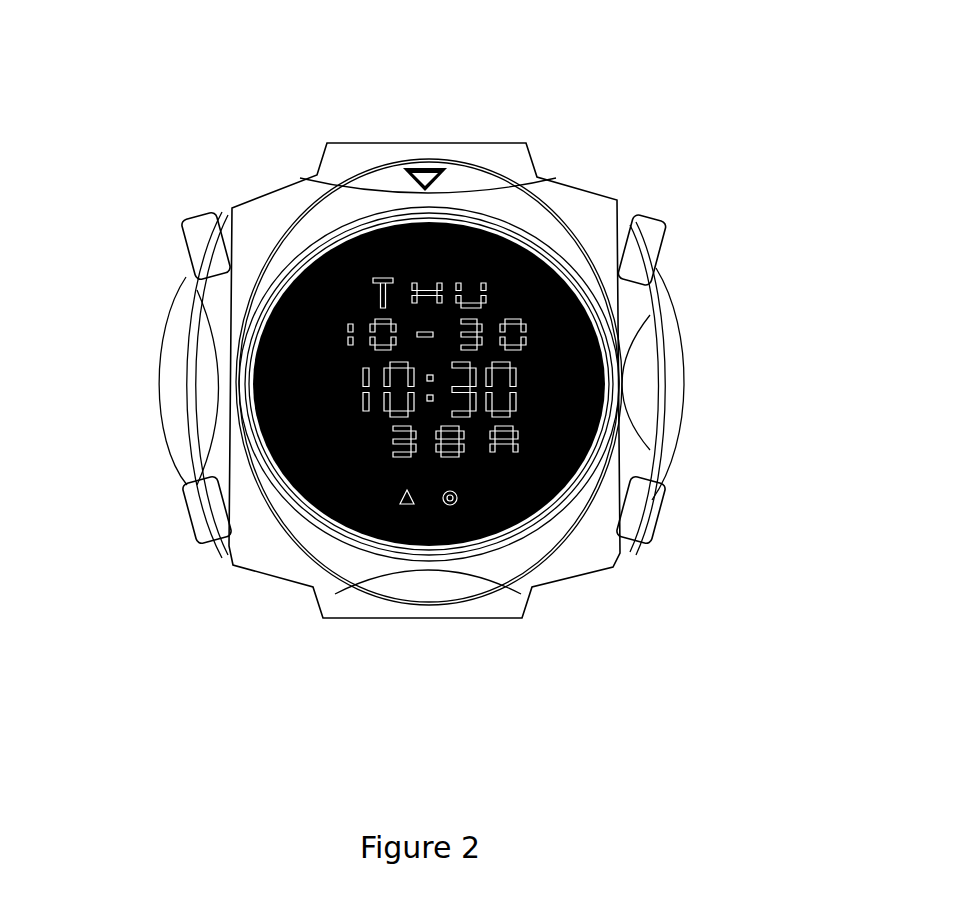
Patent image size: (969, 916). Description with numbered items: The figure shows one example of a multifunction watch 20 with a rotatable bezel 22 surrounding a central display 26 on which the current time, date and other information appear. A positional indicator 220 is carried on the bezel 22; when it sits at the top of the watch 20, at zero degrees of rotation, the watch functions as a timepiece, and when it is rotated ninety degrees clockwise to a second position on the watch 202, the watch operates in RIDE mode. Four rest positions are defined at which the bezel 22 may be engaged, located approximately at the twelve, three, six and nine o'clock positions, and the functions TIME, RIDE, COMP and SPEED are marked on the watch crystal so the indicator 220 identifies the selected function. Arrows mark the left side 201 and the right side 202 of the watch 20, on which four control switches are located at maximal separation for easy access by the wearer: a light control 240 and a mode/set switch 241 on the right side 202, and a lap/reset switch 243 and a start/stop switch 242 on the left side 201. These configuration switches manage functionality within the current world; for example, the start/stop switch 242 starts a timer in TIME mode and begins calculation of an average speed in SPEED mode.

The multifunction watch 20 is at (128, 702).
The bezel 22 is at (303, 220).
The display 26 is at (552, 262).
The positional indicator 220 is at (418, 183).
The left side of the watch 201 is at (150, 376).
The second position on the watch 202 is at (706, 395).
The light control 240 is at (661, 249).
The mode/set switch 241 is at (650, 527).
The start/stop switch 242 is at (192, 522).
The lap/reset switch 243 is at (192, 252).